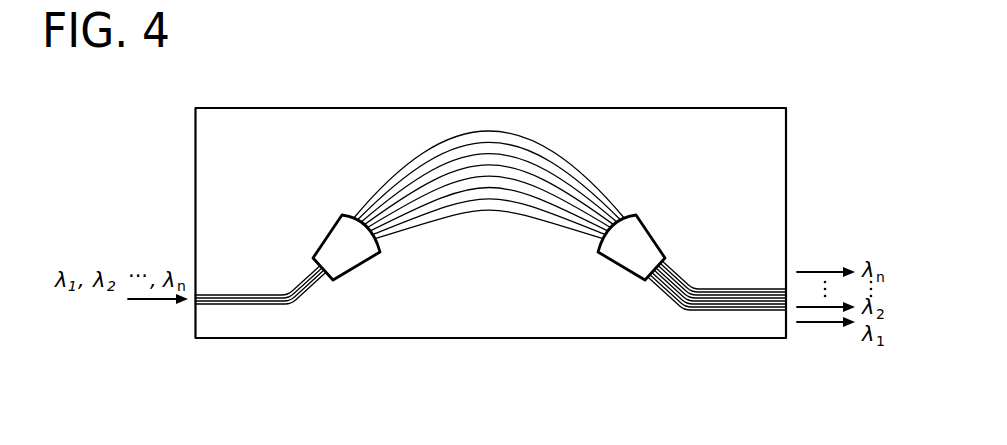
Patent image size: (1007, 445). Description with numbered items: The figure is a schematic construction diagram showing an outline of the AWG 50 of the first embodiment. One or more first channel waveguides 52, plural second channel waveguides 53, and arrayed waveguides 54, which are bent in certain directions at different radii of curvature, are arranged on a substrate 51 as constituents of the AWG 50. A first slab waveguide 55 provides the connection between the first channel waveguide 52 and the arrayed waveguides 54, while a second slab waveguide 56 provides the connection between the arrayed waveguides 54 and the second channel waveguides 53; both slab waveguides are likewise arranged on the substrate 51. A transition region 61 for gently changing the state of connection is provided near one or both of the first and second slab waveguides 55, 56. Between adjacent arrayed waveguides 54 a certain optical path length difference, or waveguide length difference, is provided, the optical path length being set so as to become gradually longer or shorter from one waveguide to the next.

The AWG 50 is at (717, 84).
The substrate 51 is at (786, 183).
The first channel waveguides 52 is at (223, 296).
The second channel waveguides 53 is at (730, 289).
The arrayed waveguides 54 is at (547, 144).
The first slab waveguide 55 is at (327, 234).
The second slab waveguide 56 is at (650, 231).
The transition region 61 is at (390, 157).